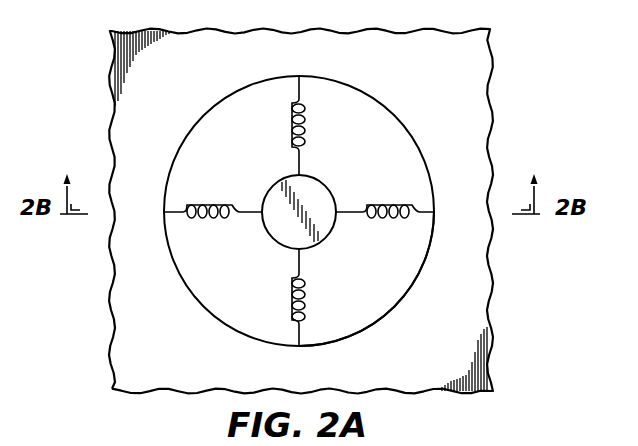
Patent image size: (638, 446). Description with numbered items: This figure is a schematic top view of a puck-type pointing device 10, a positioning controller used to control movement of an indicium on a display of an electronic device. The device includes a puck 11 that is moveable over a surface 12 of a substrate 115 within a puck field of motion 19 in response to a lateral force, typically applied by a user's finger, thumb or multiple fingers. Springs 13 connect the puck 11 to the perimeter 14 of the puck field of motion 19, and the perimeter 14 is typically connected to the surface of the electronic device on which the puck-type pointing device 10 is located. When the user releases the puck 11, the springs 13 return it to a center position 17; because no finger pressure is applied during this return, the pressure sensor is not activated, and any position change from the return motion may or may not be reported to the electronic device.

The puck-type pointing device 10 is at (308, 197).
The puck 11 is at (276, 186).
The surface 12 is at (212, 140).
The springs 13 is at (397, 204).
The perimeter 14 is at (383, 323).
The center position 17 is at (270, 247).
The puck field of motion 19 is at (368, 120).
The substrate 115 is at (110, 275).